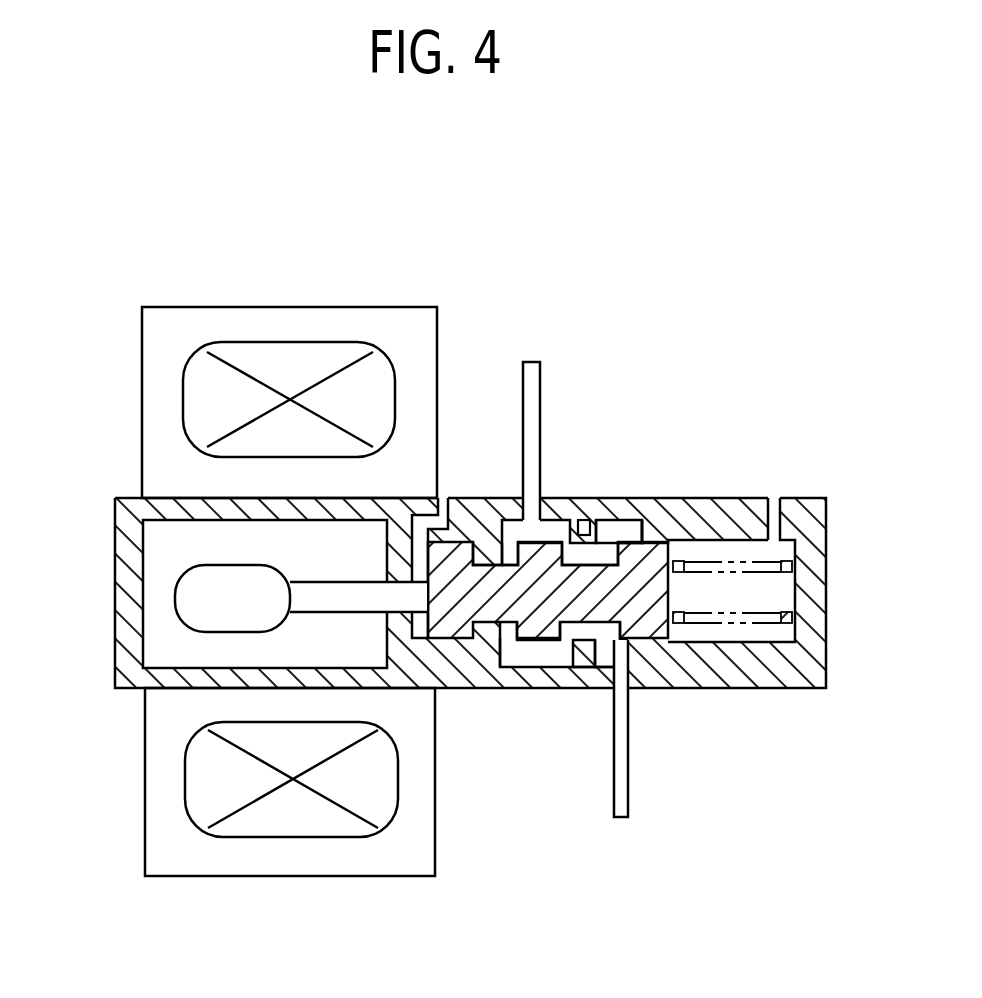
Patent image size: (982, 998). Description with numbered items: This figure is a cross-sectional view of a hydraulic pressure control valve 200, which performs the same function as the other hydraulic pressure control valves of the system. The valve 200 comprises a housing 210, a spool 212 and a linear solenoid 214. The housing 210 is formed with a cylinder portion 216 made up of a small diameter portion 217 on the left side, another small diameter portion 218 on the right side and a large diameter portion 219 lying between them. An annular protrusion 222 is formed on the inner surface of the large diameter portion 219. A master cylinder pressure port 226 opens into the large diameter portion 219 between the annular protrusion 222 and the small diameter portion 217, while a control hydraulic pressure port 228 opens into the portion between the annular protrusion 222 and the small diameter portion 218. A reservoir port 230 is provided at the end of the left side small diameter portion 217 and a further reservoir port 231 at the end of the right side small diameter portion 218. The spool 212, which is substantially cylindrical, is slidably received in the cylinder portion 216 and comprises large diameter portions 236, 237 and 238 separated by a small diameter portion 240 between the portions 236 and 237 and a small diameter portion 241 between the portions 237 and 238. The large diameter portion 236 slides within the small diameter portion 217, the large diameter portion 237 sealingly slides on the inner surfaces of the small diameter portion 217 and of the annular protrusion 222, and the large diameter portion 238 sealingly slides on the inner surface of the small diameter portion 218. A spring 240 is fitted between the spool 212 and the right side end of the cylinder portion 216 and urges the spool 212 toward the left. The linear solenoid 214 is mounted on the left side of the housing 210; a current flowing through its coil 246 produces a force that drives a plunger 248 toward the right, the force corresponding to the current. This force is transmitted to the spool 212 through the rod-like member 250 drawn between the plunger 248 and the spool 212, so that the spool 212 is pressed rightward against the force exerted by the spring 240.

The hydraulic pressure control valve 200 is at (633, 267).
The housing 210 is at (723, 518).
The spool 212 is at (510, 590).
The linear solenoid 214 is at (268, 283).
The cylinder portion 216 is at (608, 547).
The small diameter portion 217 is at (483, 553).
The small diameter portion 218 is at (693, 540).
The large diameter portion 219 is at (565, 530).
The annular protrusion 222 is at (583, 530).
The master cylinder pressure port 226 is at (543, 386).
The outlet pipe 228 is at (630, 768).
The reservoir port 230 is at (446, 498).
The reservoir port 231 is at (778, 497).
The large diameter portion 236 is at (463, 640).
The large diameter portion 237 is at (548, 645).
The large diameter portion 238 is at (600, 650).
The spring 240 is at (798, 550).
The small diameter portion 241 is at (604, 655).
The coil 246 is at (242, 840).
The plunger 248 is at (180, 597).
The plunger rod 250 is at (360, 602).